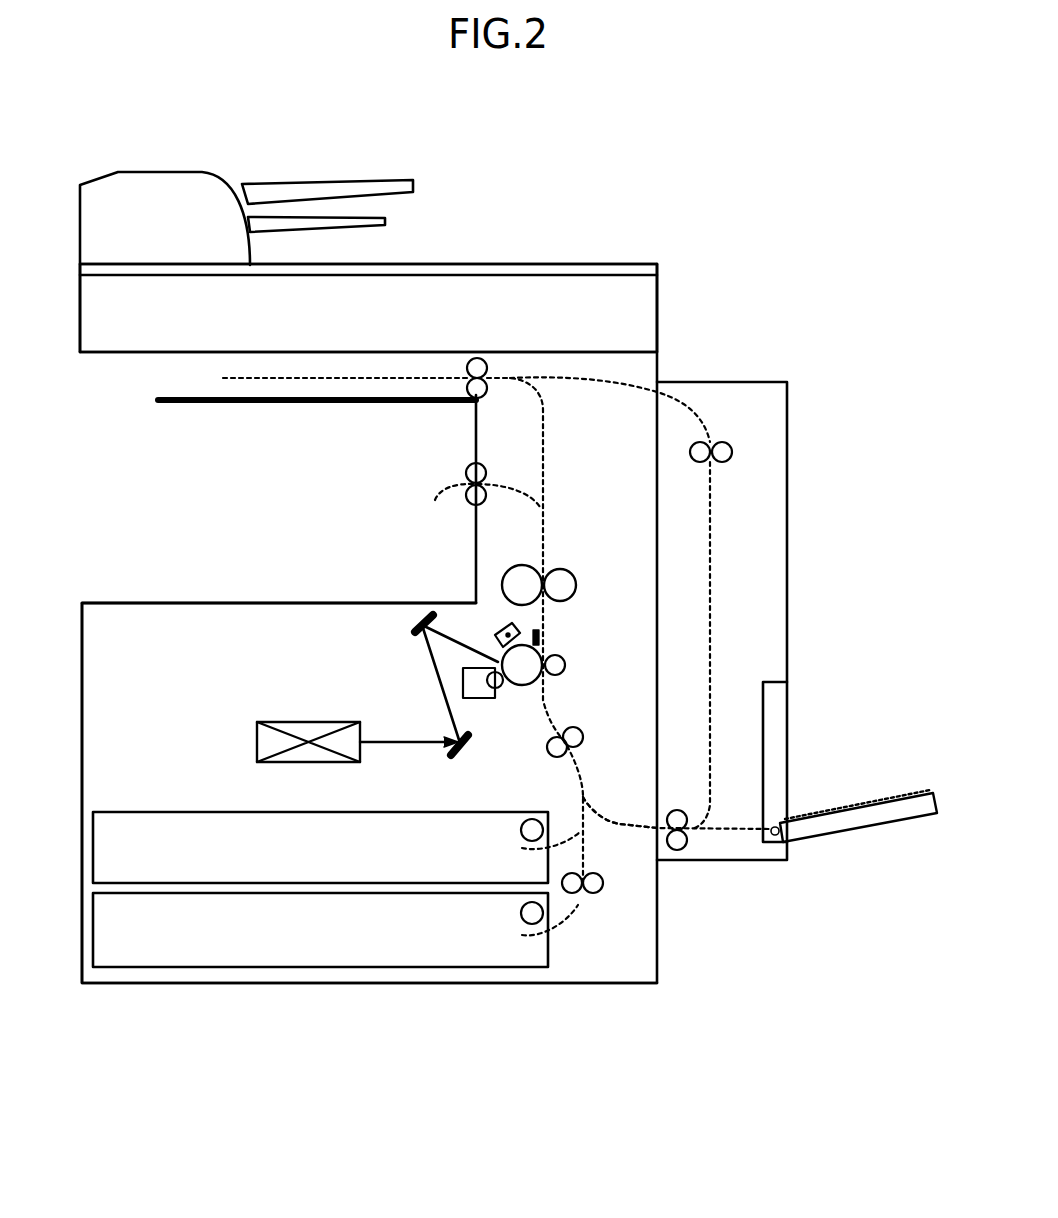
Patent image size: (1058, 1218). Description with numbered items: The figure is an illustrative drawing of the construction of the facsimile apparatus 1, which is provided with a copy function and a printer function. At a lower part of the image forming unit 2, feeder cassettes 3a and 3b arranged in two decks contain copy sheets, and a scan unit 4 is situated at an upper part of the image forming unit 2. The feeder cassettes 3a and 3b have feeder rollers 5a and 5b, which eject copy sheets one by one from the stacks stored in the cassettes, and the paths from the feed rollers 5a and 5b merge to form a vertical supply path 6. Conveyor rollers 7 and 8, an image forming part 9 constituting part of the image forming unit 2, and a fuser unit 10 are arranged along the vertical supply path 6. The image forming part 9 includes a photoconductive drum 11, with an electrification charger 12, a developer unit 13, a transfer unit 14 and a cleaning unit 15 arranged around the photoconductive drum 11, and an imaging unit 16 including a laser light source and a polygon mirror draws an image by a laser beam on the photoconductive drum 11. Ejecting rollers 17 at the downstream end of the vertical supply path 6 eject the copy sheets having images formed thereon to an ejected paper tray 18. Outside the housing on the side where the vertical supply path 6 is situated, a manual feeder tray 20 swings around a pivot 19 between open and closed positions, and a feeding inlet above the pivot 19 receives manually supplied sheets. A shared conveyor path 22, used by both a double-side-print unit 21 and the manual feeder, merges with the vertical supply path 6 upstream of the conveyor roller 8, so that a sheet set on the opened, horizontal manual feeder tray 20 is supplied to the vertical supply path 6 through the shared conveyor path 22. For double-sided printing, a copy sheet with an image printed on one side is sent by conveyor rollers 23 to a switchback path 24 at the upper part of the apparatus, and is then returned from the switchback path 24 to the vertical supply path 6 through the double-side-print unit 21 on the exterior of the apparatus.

The facsimile apparatus 1 is at (729, 218).
The image forming unit 2 is at (122, 600).
The feeder cassette 3a is at (208, 865).
The feeder cassette 3b is at (303, 948).
The scan unit 4 is at (482, 258).
The feeder roller 5a is at (520, 835).
The feeder roller 5b is at (527, 927).
The vertical supply path 6 is at (562, 703).
The conveyor roller 7 is at (592, 893).
The conveyor roller 8 is at (583, 745).
The image forming part 9 is at (372, 681).
The fuser unit 10 is at (504, 582).
The photoconductive drum 11 is at (518, 692).
The electrification charger 12 is at (493, 637).
The developer unit 13 is at (485, 700).
The transfer unit 14 is at (568, 663).
The cleaning unit 15 is at (556, 640).
The imaging unit 16 is at (268, 722).
The ejecting rollers 17 is at (466, 472).
The ejected paper tray 18 is at (276, 603).
The pivot 19 is at (788, 848).
The manual feeder tray 20 is at (873, 818).
The double-side-print unit 21 is at (758, 468).
The shared conveyor path 22 is at (632, 836).
The conveyor rollers 23 is at (482, 363).
The switchback path 24 is at (250, 380).